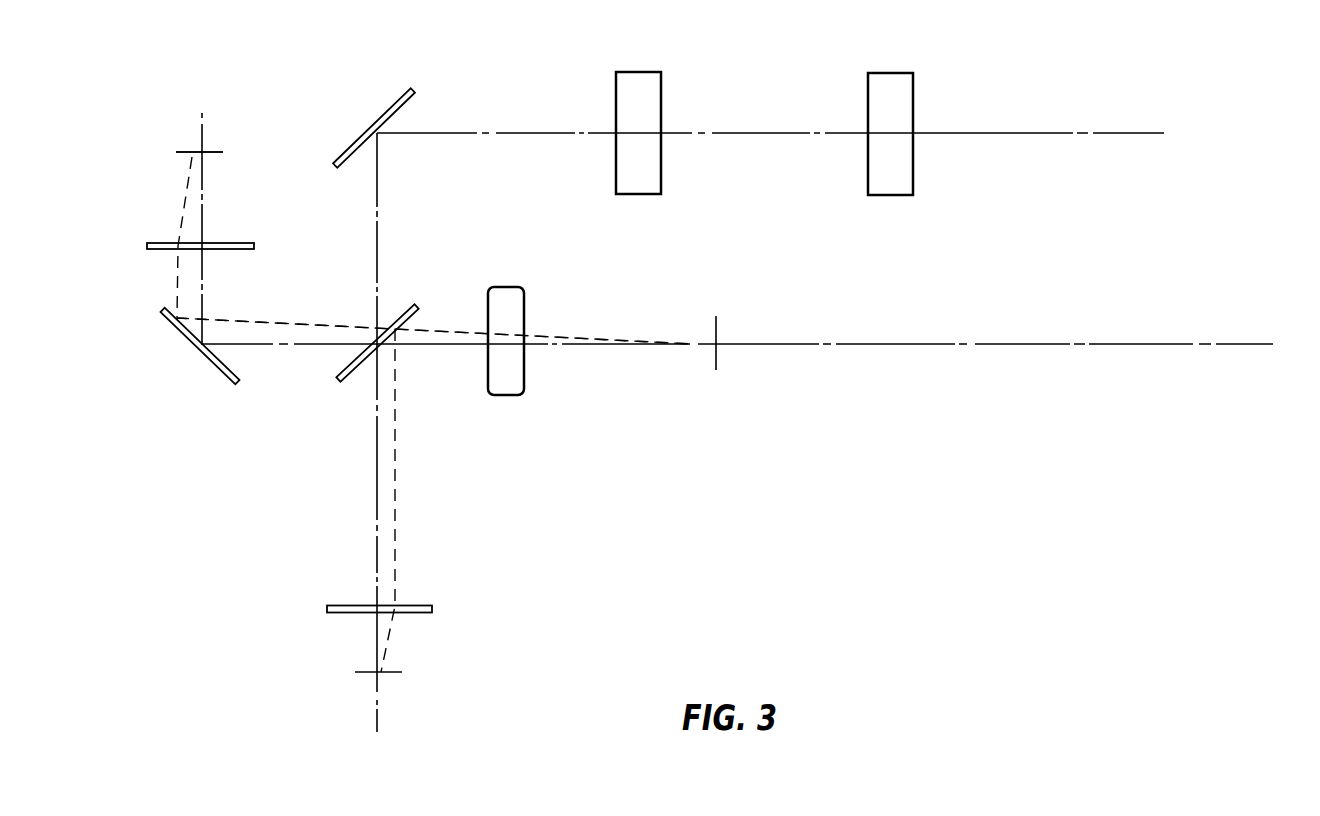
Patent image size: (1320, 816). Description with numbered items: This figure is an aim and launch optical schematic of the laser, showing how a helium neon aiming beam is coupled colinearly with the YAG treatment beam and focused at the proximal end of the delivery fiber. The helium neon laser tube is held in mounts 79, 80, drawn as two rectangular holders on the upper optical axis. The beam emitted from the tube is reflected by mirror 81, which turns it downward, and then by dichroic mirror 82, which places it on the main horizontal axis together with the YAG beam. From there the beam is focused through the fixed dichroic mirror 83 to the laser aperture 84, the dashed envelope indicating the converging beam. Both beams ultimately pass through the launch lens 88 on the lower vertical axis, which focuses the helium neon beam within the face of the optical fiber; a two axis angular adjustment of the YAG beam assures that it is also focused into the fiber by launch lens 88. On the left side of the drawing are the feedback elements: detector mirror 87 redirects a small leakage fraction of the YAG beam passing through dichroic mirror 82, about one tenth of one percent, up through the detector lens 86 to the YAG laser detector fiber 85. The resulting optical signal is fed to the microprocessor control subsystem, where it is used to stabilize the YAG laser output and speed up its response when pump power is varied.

The mount 79 is at (662, 92).
The mount 80 is at (913, 92).
The mirror 81 is at (413, 92).
The dichroic mirror 82 is at (417, 308).
The fixed dichroic mirror 83 is at (512, 397).
The laser aperture 84 is at (562, 338).
The YAG laser detector fiber 85 is at (203, 130).
The detector lens 86 is at (208, 243).
The detector mirror 87 is at (203, 337).
The launch lens 88 is at (406, 604).